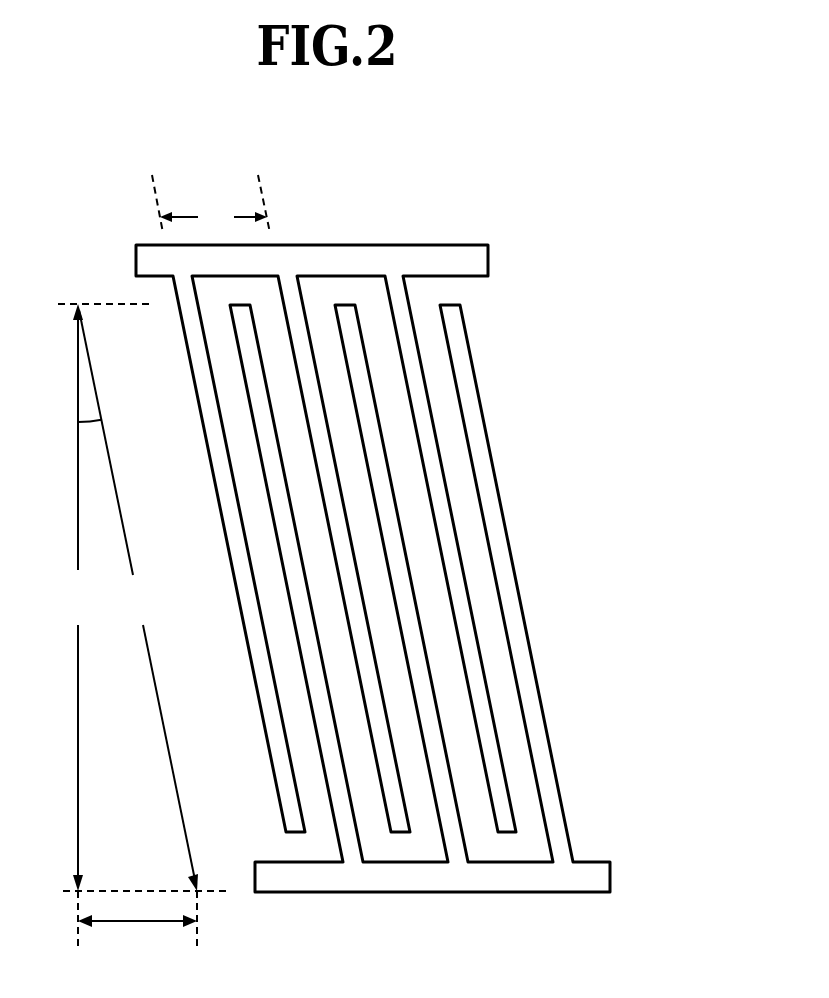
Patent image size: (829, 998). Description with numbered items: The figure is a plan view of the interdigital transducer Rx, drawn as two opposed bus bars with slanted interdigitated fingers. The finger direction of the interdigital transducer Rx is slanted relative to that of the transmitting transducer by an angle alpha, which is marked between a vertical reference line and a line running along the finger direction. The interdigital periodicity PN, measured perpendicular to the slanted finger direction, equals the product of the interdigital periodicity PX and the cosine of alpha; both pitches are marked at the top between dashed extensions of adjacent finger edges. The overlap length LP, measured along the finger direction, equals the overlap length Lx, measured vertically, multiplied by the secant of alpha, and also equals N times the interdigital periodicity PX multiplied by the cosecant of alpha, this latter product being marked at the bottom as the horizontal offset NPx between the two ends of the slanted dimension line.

The interdigital transducer Rx is at (398, 256).
The interdigital periodicity PN is at (255, 199).
The interdigital periodicity PX is at (213, 223).
The overlap length Lx is at (142, 597).
The overlap length LP is at (138, 600).
The N times the interdigital periodicity NPx is at (137, 932).